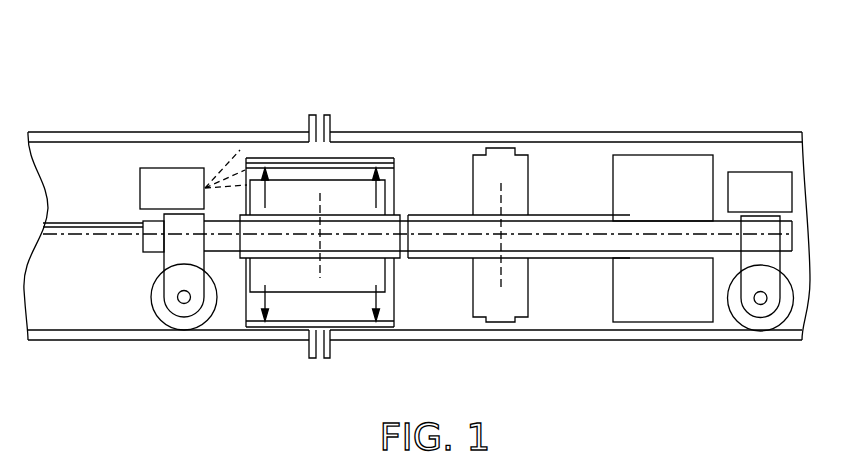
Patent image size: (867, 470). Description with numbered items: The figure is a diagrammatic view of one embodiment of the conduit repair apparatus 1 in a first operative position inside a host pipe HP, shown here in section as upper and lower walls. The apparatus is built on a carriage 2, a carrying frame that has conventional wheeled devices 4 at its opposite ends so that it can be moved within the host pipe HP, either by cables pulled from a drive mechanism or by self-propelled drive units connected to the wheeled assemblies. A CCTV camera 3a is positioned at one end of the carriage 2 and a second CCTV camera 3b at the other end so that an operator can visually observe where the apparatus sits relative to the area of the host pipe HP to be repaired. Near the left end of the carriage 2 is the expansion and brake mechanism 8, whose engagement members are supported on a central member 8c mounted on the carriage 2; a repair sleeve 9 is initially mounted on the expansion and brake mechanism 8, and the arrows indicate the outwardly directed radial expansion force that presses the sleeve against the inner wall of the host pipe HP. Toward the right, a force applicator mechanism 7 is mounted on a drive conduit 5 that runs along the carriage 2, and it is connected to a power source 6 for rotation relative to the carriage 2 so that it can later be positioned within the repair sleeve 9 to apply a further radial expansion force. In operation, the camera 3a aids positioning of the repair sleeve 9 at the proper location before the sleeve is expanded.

The conduit repair apparatus 1 is at (456, 88).
The host pipe HP is at (112, 132).
The carriage 2 is at (662, 222).
The CCTV camera 3a is at (157, 182).
The CCTV camera 3b is at (758, 190).
The wheeled devices 4 is at (168, 285).
The drive conduit 5 is at (578, 258).
The power source 6 is at (667, 308).
The force applicator mechanism 7 is at (507, 163).
The expansion and brake mechanism 8 is at (300, 280).
The central member 8c is at (305, 215).
The repair sleeve 9 is at (347, 148).